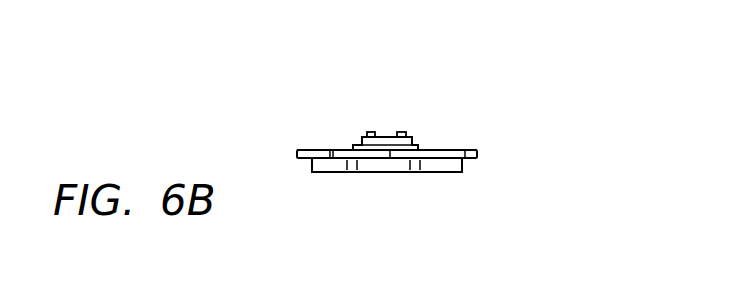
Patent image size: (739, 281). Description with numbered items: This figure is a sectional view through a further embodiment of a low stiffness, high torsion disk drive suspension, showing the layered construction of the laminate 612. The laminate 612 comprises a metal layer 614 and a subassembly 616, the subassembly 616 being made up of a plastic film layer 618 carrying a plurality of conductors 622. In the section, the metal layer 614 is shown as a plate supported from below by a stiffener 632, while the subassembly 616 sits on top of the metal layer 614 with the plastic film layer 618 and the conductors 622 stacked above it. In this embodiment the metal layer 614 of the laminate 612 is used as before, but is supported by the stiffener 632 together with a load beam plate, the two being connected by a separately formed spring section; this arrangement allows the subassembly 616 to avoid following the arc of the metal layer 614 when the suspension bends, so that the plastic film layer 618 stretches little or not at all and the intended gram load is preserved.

The laminate 612 is at (345, 147).
The metal layer 614 is at (430, 149).
The subassembly 616 is at (447, 122).
The plastic film layer 618 is at (407, 134).
The conductors 622 is at (371, 134).
The stiffener 632 is at (335, 173).